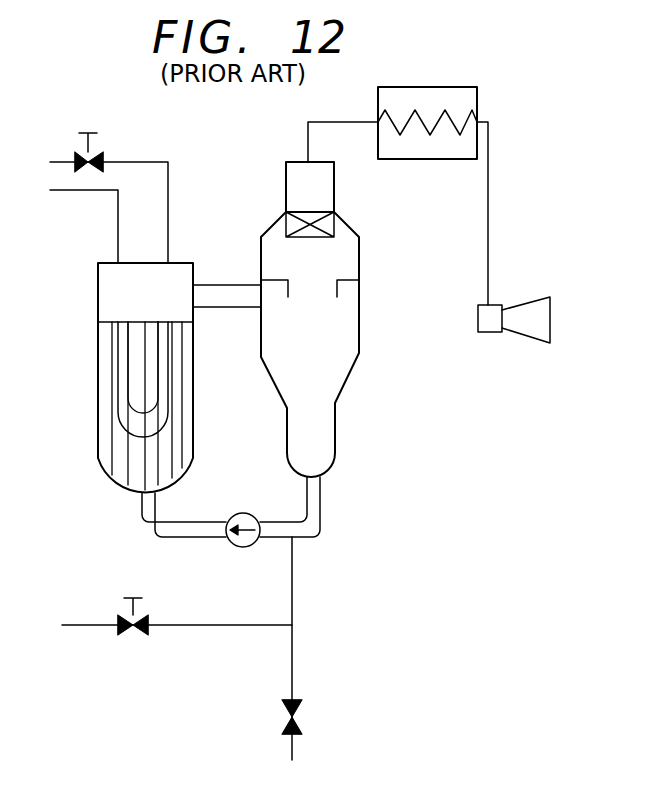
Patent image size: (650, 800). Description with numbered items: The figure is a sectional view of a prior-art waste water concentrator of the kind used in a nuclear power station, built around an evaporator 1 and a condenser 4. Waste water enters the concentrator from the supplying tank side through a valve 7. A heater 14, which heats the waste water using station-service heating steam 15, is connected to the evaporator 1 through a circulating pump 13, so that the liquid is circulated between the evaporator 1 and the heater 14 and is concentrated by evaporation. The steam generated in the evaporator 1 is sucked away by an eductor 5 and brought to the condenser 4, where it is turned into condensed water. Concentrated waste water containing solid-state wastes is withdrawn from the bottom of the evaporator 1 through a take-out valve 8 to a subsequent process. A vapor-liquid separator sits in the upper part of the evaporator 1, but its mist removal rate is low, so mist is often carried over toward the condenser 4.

The evaporator 1 is at (327, 438).
The condenser 4 is at (477, 98).
The eductor 5 is at (550, 316).
The valve 7 is at (140, 636).
The take-out valve 8 is at (300, 710).
The circulating pump 13 is at (242, 513).
The heater 14 is at (98, 392).
The station-service heating steam 15 is at (145, 162).